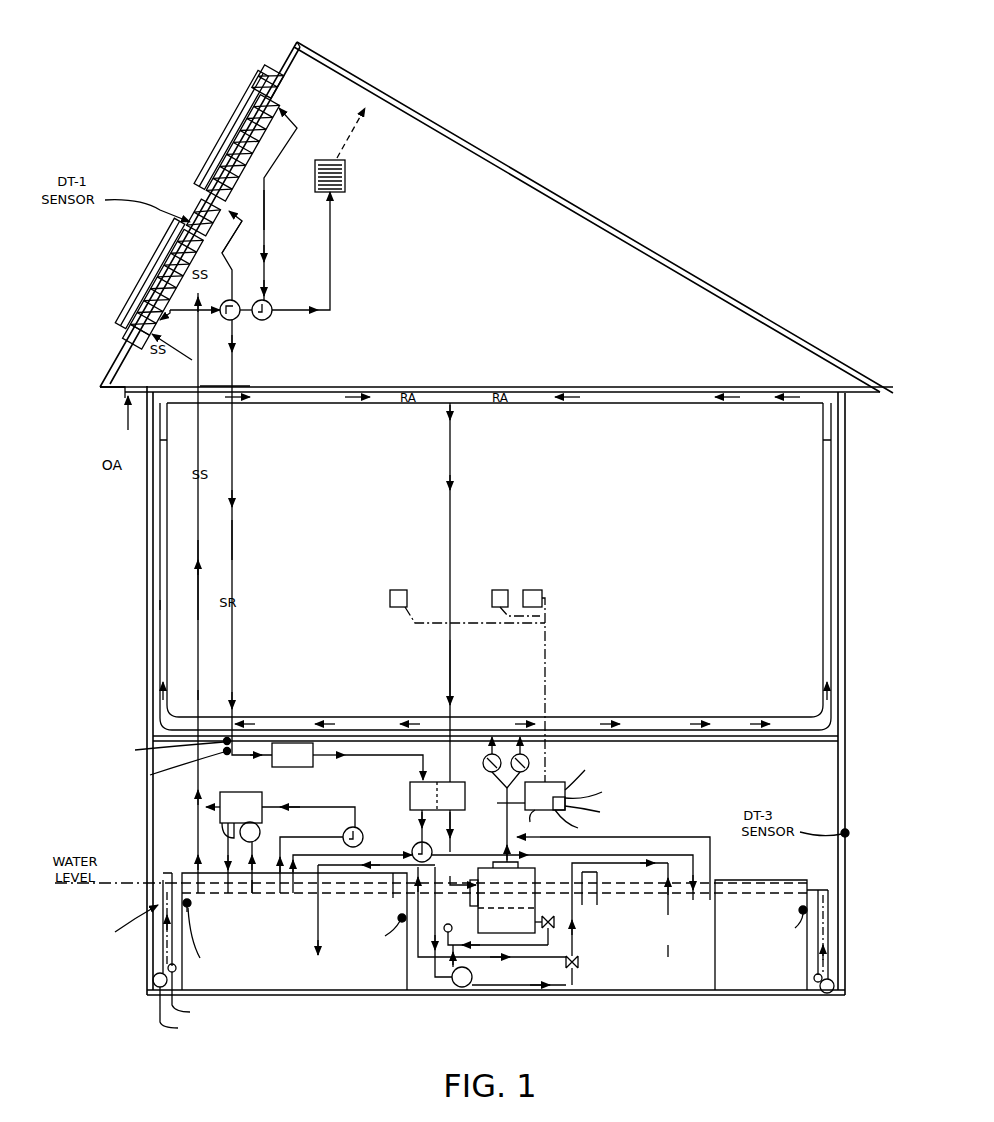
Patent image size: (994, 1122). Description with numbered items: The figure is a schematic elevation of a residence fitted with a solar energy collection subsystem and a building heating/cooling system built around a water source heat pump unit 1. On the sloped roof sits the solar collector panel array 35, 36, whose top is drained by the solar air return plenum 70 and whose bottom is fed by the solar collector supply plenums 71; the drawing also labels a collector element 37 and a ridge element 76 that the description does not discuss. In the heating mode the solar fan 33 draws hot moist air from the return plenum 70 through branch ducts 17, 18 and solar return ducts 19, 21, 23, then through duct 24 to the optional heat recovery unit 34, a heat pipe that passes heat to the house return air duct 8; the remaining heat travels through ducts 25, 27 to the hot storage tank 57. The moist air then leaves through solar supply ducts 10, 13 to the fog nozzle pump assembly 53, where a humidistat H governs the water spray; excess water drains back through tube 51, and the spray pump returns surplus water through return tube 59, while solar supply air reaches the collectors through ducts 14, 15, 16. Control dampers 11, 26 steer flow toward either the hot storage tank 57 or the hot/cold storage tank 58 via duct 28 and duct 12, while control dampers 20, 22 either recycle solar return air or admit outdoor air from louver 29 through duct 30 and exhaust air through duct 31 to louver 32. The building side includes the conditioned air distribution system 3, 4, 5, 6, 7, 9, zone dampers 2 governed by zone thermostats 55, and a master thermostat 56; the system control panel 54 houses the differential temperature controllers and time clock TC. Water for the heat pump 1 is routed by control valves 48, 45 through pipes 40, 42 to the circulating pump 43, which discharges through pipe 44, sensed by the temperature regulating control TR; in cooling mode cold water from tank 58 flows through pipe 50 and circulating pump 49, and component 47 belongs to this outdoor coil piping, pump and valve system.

The water source heat pump unit 1 is at (537, 876).
The zone dampers 2 is at (516, 748).
The conditioned air distribution system 3 is at (430, 717).
The conditioned air distribution system 4 is at (190, 706).
The conditioned air distribution system 5 is at (158, 708).
The conditioned air distribution system 6 is at (430, 388).
The conditioned air distribution system 7 is at (452, 462).
The house return air duct 8 is at (452, 672).
The conditioned air distribution system 9 is at (505, 812).
The solar supply duct 10 is at (306, 836).
The control damper 11 is at (360, 830).
The solar supply duct 12 is at (708, 838).
The solar supply duct 13 is at (335, 806).
The solar supply duct 14 is at (199, 580).
The solar supply duct 15 is at (190, 361).
The solar supply duct 16 is at (199, 366).
The branch duct 17 is at (242, 221).
The branch duct 18 is at (266, 222).
The solar return duct 19 is at (266, 300).
The control damper 20 is at (266, 322).
The solar return duct 21 is at (232, 300).
The control damper 22 is at (234, 338).
The solar return duct 23 is at (234, 532).
The duct 24 is at (386, 752).
The duct 25 is at (413, 842).
The control damper 26 is at (426, 842).
The duct 27 is at (376, 850).
The duct 28 is at (586, 854).
The outdoor intake louver 29 is at (112, 403).
The outside air duct 30 is at (188, 310).
The exhaust duct 31 is at (330, 277).
The outdoor exhaust louver 32 is at (345, 176).
The solar fan 33 is at (262, 748).
The heat recovery unit 34 is at (410, 792).
The solar collector panel array 35 is at (130, 336).
The solar collector panel array 36 is at (244, 82).
The collector top section 37 is at (278, 94).
The pipe 40 is at (392, 898).
The pipe 42 is at (550, 984).
The circulating pump 43 is at (451, 978).
The supply water flow pipe 44 is at (437, 914).
The control valve 45 is at (548, 916).
The outdoor coil piping component 47 is at (320, 880).
The control valve 48 is at (580, 962).
The circulating pump 49 is at (666, 960).
The pipe 50 is at (597, 900).
The drain tube 51 is at (200, 898).
The fog nozzle pump assembly 53 is at (255, 792).
The system control panel 54 is at (548, 776).
The zone thermostats 55 is at (398, 590).
The master thermostat 56 is at (532, 590).
The hot storage tank 57 is at (312, 975).
The hot/cold storage tank 58 is at (775, 982).
The return tube 59 is at (252, 898).
The solar air return plenum 70 is at (246, 108).
The solar collector supply plenum 71 is at (223, 166).
The roof ridge 76 is at (287, 50).